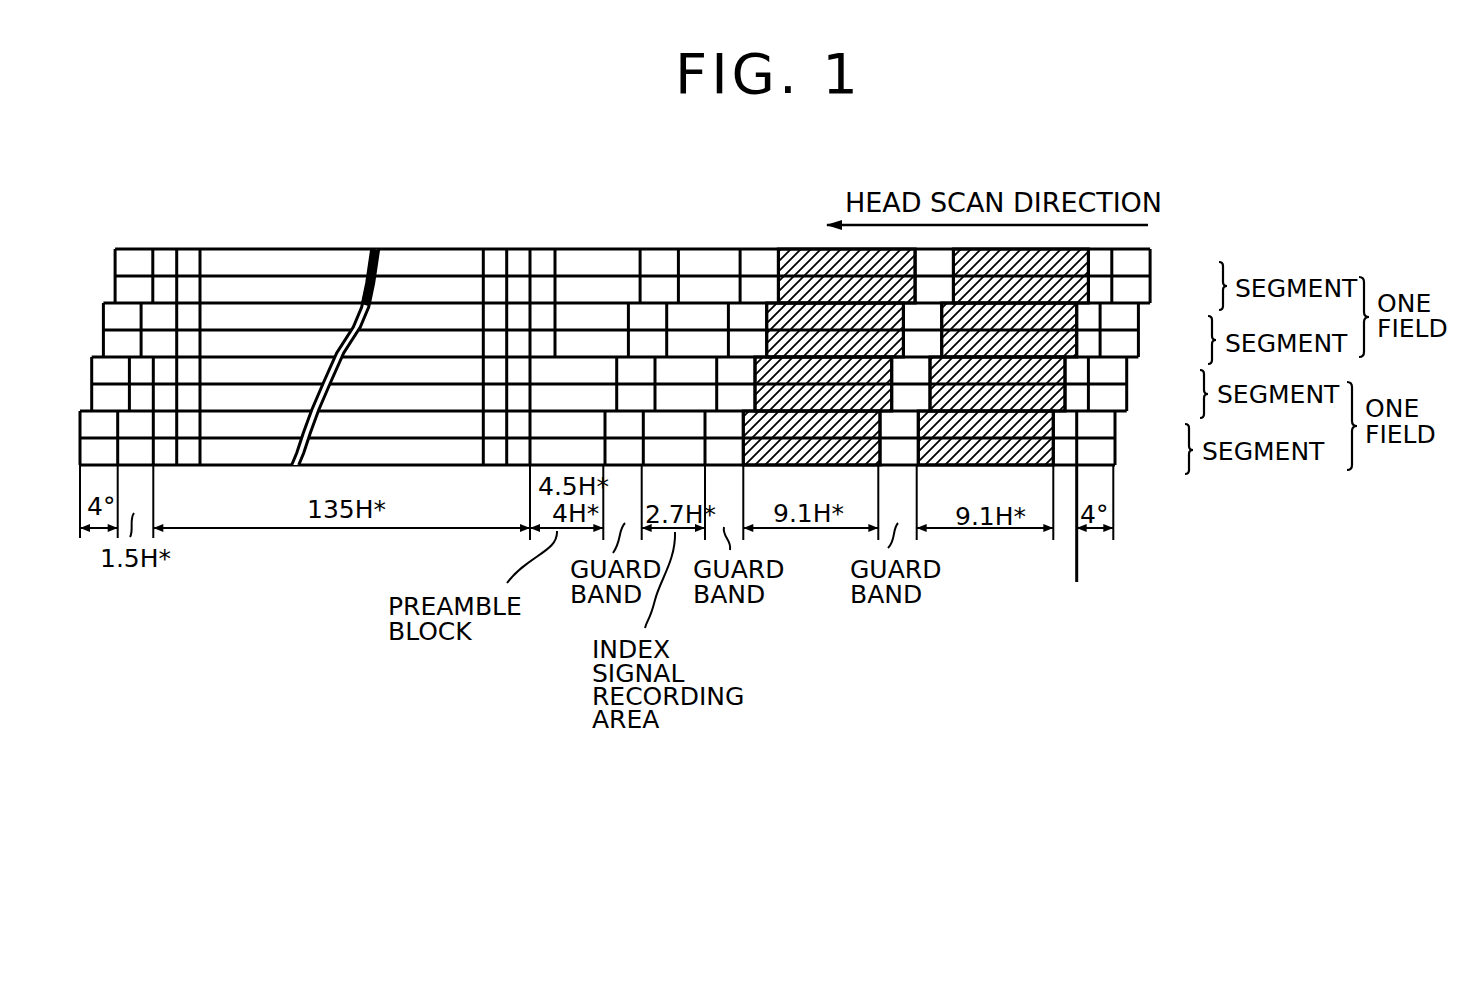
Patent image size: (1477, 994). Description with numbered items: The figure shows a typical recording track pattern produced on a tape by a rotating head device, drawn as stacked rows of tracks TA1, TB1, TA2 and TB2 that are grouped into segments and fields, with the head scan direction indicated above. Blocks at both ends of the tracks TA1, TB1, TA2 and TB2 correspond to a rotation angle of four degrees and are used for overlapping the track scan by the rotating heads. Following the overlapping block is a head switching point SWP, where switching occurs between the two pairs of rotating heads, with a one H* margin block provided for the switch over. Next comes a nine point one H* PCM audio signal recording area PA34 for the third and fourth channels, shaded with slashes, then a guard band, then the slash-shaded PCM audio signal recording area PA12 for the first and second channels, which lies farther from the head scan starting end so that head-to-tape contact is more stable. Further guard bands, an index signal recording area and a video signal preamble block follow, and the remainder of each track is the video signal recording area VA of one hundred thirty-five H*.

The video signal recording area VA is at (341, 405).
The PCM audio signal recording area PA12 is at (810, 532).
The PCM audio signal recording area PA34 is at (980, 533).
The head switching point SWP is at (1063, 525).
The track TB1 is at (1139, 328).
The track TA1 is at (1139, 355).
The track TB2 is at (1151, 274).
The track TA2 is at (1151, 302).